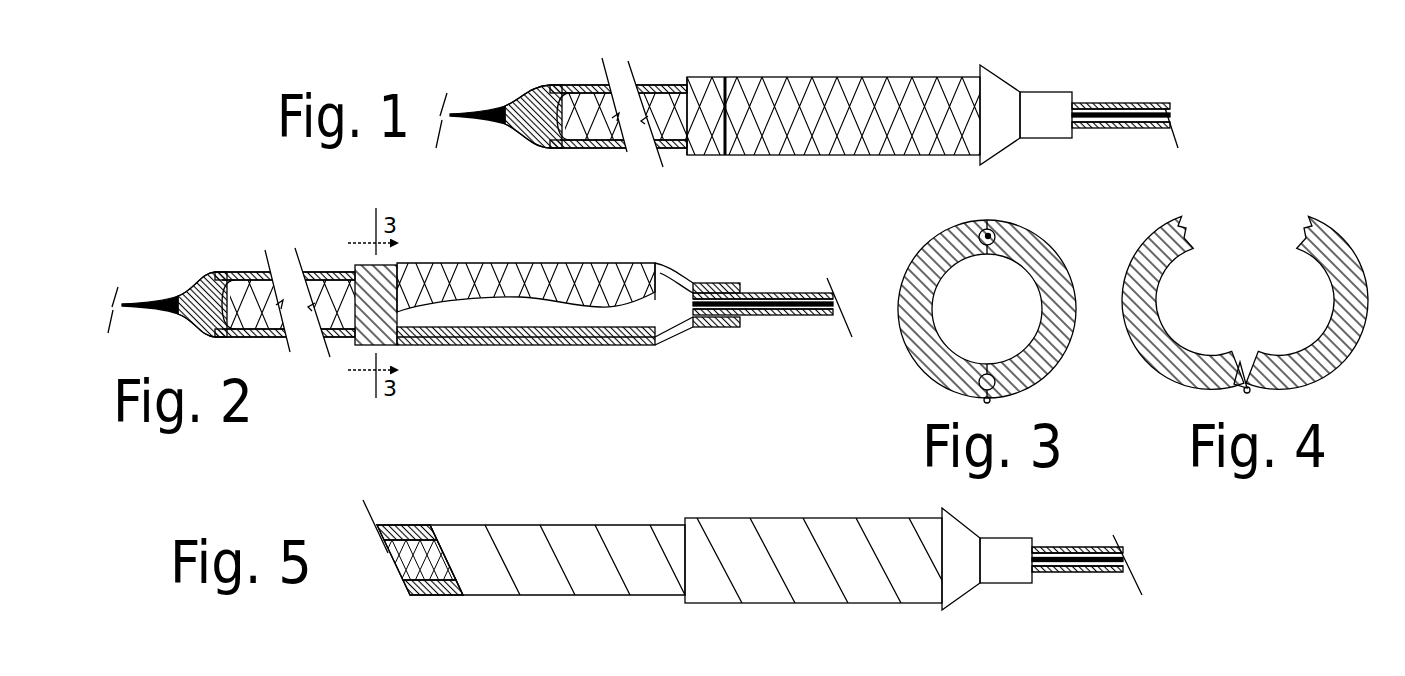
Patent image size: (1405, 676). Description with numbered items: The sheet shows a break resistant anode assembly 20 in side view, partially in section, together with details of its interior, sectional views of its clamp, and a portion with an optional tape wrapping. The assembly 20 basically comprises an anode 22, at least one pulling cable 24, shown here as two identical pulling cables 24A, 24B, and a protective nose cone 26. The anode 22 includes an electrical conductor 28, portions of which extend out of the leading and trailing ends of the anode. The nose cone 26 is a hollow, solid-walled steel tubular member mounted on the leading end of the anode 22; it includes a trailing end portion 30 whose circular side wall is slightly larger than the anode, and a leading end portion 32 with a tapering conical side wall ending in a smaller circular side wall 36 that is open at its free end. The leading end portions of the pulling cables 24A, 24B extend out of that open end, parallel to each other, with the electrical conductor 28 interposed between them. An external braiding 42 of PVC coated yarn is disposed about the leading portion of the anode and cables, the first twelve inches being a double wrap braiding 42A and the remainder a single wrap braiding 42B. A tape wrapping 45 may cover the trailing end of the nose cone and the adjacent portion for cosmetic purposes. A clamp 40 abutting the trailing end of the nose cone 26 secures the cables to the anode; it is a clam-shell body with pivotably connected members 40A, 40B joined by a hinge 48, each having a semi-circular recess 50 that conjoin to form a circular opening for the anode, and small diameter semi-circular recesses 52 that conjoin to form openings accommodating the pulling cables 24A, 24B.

In FIG. 1, the anode assembly 20 is at (796, 121).
In FIG. 1, the anode 22 is at (669, 97).
In FIG. 2, the anode 22 is at (334, 292).
In FIG. 5, the anode 22 is at (435, 555).
In FIG. 1, the pulling cable 24 is at (1130, 109).
In FIG. 2, the pulling cable 24 is at (771, 292).
In FIG. 5, the pulling cable 24 is at (1051, 544).
In FIG. 1, the pulling cable 24A is at (1129, 105).
In FIG. 2, the pulling cable 24A is at (251, 282).
In FIG. 3, the pulling cable 24A is at (985, 230).
In FIG. 5, the pulling cable 24A is at (413, 530).
In FIG. 1, the pulling cable 24B is at (1129, 125).
In FIG. 2, the pulling cable 24B is at (252, 338).
In FIG. 3, the pulling cable 24B is at (998, 381).
In FIG. 5, the pulling cable 24B is at (423, 598).
In FIG. 1, the protective nose cone 26 is at (1011, 111).
In FIG. 2, the protective nose cone 26 is at (714, 282).
In FIG. 5, the protective nose cone 26 is at (971, 559).
In FIG. 1, the electrical conductor 28 is at (467, 118).
In FIG. 2, the electrical conductor 28 is at (148, 308).
In FIG. 5, the electrical conductor 28 is at (1071, 567).
In FIG. 1, the trailing end portion 30 is at (802, 83).
In FIG. 2, the trailing end portion 30 is at (488, 266).
In FIG. 1, the leading end portion 32 is at (989, 73).
In FIG. 2, the leading end portion 32 is at (665, 273).
In FIG. 1, the circular side wall 36 is at (1063, 122).
In FIG. 2, the circular side wall 36 is at (733, 326).
In FIG. 5, the circular side wall 36 is at (1026, 566).
In FIG. 1, the clamp 40 is at (704, 134).
In FIG. 2, the clamp 40 is at (400, 340).
In FIG. 3, the clamp 40 is at (985, 309).
In FIG. 4, the clamp 40 is at (1243, 318).
In FIG. 3, the pivotably connected member 40A is at (913, 296).
In FIG. 4, the pivotably connected member 40A is at (1191, 389).
In FIG. 3, the pivotably connected member 40B is at (1051, 263).
In FIG. 4, the pivotably connected member 40B is at (1304, 383).
In FIG. 1, the external braiding 42 is at (851, 85).
In FIG. 2, the external braiding 42 is at (536, 275).
In FIG. 1, the double wrap braiding 42A is at (919, 85).
In FIG. 2, the double wrap braiding 42A is at (604, 275).
In FIG. 1, the single wrap braiding 42B is at (556, 143).
In FIG. 2, the single wrap braiding 42B is at (228, 276).
In FIG. 5, the tape wrapping 45 is at (740, 548).
In FIG. 3, the hinge 48 is at (991, 402).
In FIG. 4, the hinge 48 is at (1252, 394).
In FIG. 3, the semi-circular recess 50 is at (943, 285).
In FIG. 4, the semi-circular recess 50 is at (1160, 285).
In FIG. 3, the small diameter semi-circular recess 52 is at (975, 235).
In FIG. 4, the small diameter semi-circular recess 52 is at (1180, 246).